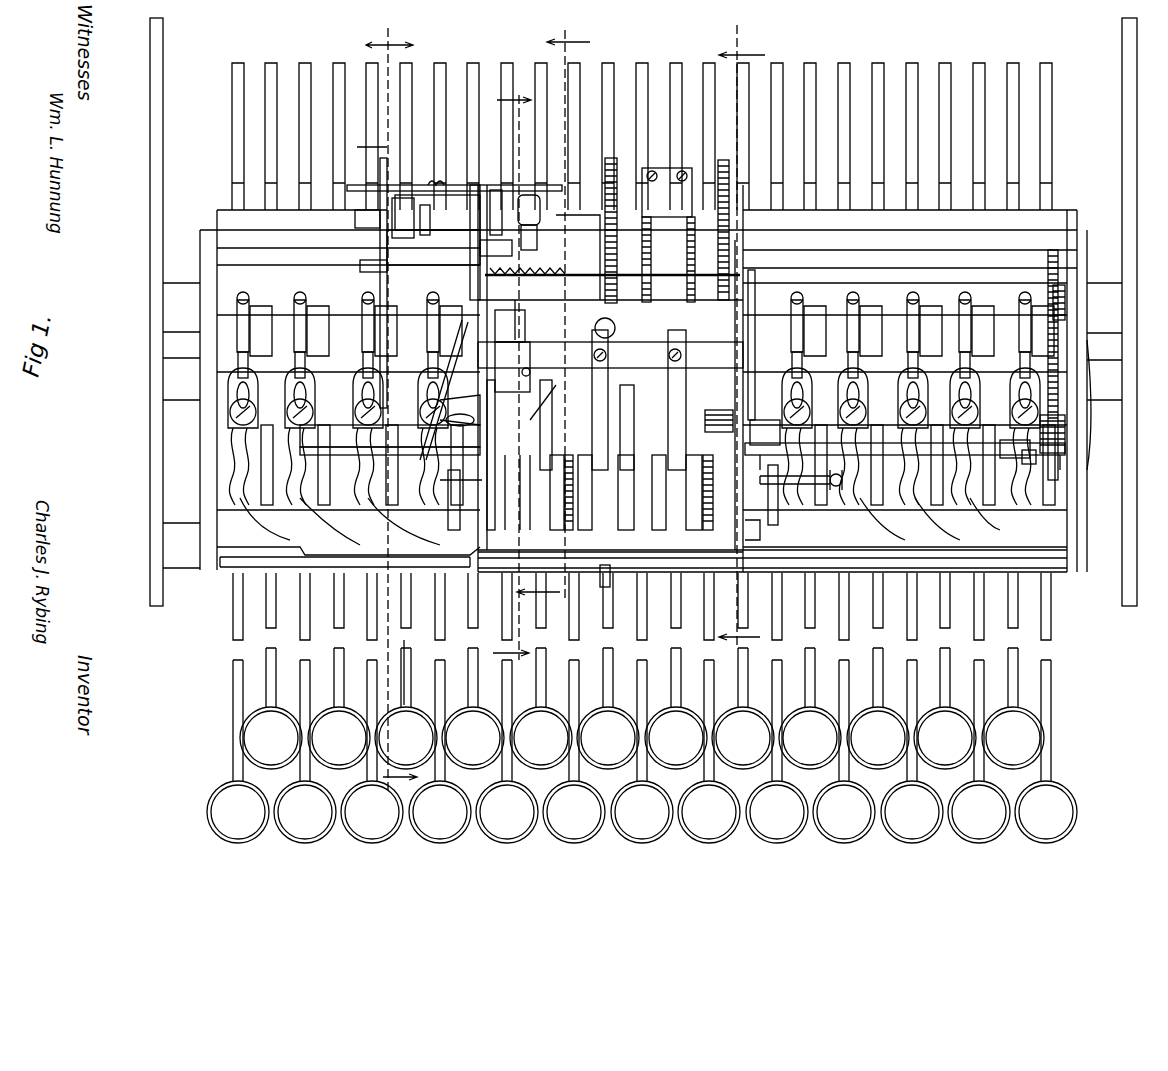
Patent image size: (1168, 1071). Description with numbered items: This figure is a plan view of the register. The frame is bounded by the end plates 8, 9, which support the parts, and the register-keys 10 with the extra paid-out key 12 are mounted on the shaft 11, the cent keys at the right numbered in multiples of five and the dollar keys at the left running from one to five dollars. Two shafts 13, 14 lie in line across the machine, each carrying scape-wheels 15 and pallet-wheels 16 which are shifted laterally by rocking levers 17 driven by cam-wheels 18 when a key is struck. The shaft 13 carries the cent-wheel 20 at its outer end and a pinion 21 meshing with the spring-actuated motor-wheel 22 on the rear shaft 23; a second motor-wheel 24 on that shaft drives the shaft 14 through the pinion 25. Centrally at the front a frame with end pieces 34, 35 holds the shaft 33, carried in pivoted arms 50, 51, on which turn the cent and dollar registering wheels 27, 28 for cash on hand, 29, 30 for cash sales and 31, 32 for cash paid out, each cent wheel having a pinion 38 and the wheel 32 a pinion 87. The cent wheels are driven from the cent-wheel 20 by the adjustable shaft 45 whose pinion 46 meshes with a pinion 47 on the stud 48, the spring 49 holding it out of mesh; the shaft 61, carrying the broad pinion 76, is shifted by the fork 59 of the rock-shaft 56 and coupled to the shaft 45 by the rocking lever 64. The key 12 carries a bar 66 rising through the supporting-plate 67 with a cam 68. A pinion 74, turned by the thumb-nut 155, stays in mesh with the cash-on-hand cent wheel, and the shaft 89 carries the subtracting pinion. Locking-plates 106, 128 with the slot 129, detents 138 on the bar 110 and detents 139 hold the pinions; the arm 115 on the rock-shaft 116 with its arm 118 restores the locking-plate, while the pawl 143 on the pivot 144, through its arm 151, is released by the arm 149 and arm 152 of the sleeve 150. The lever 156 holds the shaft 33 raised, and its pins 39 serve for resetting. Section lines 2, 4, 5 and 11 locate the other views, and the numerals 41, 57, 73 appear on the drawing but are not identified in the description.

The section line 2 is at (387, 411).
The section line 4 is at (742, 334).
The section line 5 is at (553, 313).
The end plate 8 is at (1137, 452).
The end plate 9 is at (150, 456).
The register-keys 10 is at (1042, 687).
The shaft 11 is at (512, 385).
The paid-out key 12 is at (412, 685).
The shaft 13 is at (690, 318).
The shaft 14 is at (509, 326).
The scape-wheels 15 is at (652, 331).
The pallet-wheels 16 is at (634, 322).
The rocking levers 17 is at (805, 390).
The cam-wheels 18 is at (918, 537).
The cent-wheel 20 is at (1058, 378).
The pinion 21 is at (697, 400).
The motor-wheel 22 is at (722, 160).
The shaft 23 is at (643, 391).
The motor-wheel 24 is at (604, 168).
The pinion 25 is at (596, 327).
The cent registering wheel 27 is at (692, 505).
The dollar registering wheel 28 is at (660, 503).
The cent registering wheel 29 is at (626, 504).
The dollar registering wheel 30 is at (588, 502).
The cent registering wheel 31 is at (560, 503).
The dollar registering wheel 32 is at (514, 500).
The shaft 33 is at (635, 497).
The end piece 34 is at (740, 541).
The end piece 35 is at (405, 442).
The pinion 38 is at (713, 481).
The pins 39 is at (461, 419).
The rod 41 is at (833, 495).
The shaft 45 is at (682, 440).
The pinion 46 is at (1030, 464).
The pinion 47 is at (1058, 453).
The stud 48 is at (1000, 446).
The spring 49 is at (1090, 400).
The arm 50 is at (760, 530).
The arm 51 is at (478, 537).
The rock-shaft 56 is at (540, 235).
The pin 57 is at (496, 249).
The fork 59 is at (476, 410).
The shaft 61 is at (755, 375).
The rocking lever 64 is at (444, 390).
The bar 66 is at (403, 218).
The supporting-plate 67 is at (437, 215).
The cam 68 is at (519, 372).
The block 73 is at (765, 432).
The pinion 74 is at (720, 410).
The pinion 76 is at (648, 356).
The pinion 87 is at (534, 505).
The shaft 89 is at (652, 395).
The locking-plate 106 is at (559, 414).
The bar 110 is at (512, 367).
The arm 115 is at (720, 305).
The rock-shaft 116 is at (665, 272).
The arm 118 is at (480, 237).
The locking-plate 128 is at (685, 405).
The slot 129 is at (373, 266).
The detents 138 is at (680, 437).
The detents 139 is at (631, 427).
The pawl 143 is at (492, 185).
The pivot 144 is at (435, 182).
The arm 149 is at (367, 219).
The sleeve 150 is at (433, 247).
The arm 151 is at (378, 185).
The arm 152 is at (490, 251).
The thumb-nut 155 is at (910, 453).
The lever 156 is at (605, 587).